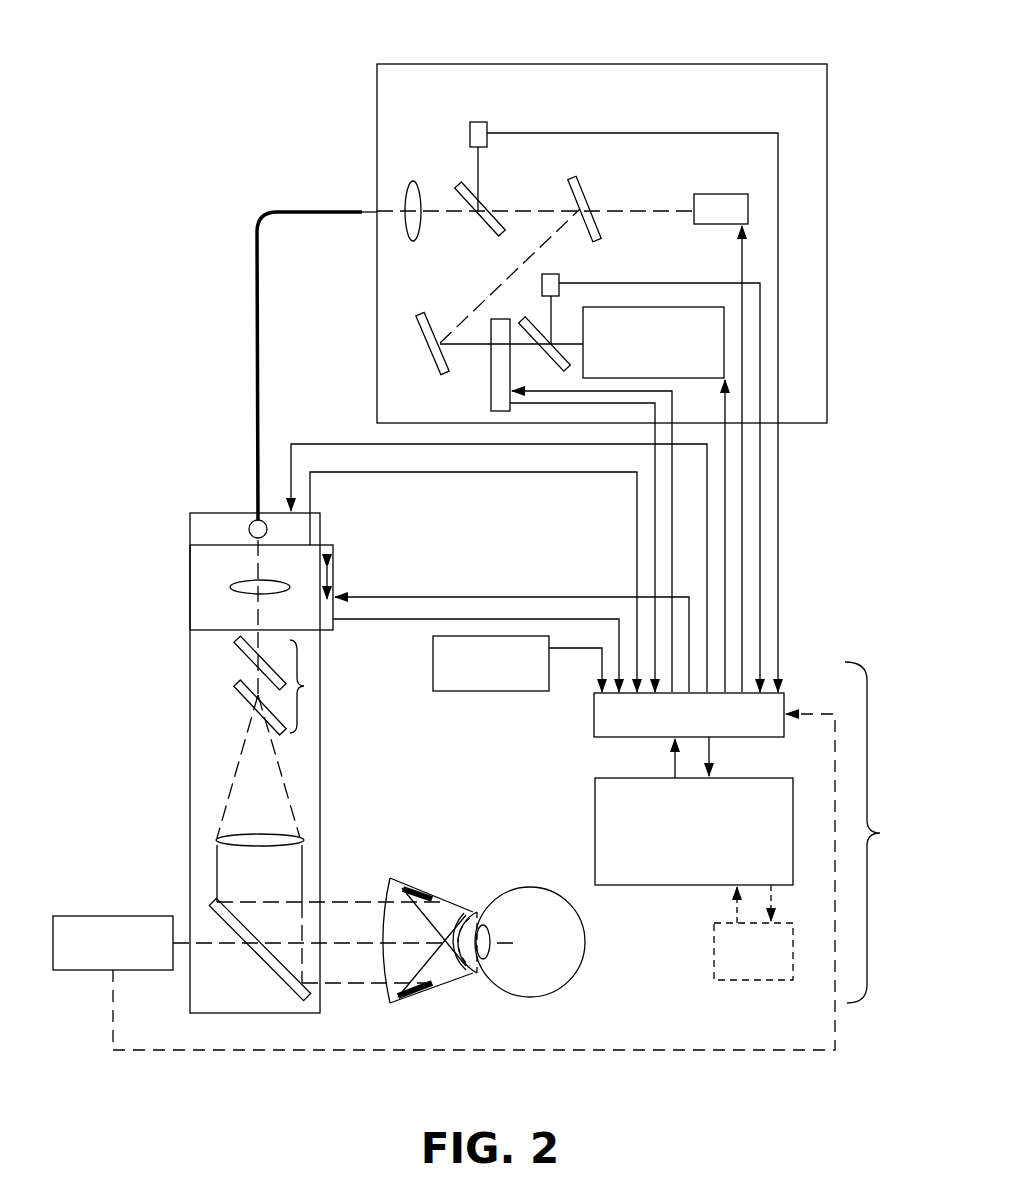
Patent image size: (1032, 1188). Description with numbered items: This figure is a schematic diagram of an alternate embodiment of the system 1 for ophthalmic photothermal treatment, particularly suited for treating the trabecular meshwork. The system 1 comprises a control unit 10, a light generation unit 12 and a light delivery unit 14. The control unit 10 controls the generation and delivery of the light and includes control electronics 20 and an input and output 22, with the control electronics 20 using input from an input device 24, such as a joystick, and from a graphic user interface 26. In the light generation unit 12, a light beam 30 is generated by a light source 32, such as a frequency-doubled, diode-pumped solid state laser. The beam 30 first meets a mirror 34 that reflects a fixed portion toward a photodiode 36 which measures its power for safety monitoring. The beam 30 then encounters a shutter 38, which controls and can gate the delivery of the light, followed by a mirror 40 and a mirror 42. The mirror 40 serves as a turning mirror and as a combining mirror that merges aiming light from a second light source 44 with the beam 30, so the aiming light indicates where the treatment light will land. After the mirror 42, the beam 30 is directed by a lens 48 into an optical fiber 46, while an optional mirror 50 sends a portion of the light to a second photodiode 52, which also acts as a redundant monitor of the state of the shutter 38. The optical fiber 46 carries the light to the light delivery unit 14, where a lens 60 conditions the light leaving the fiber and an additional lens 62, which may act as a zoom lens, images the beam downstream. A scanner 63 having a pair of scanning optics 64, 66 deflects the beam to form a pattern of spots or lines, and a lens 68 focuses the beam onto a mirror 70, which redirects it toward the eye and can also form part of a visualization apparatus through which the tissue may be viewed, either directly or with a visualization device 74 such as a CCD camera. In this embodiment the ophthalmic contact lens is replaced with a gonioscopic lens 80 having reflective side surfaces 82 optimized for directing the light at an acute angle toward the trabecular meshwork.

The system 1 is at (204, 93).
The control unit 10 is at (883, 832).
The light generation unit 12 is at (773, 63).
The light delivery unit 14 is at (189, 795).
The control electronics 20 is at (678, 845).
The input and output 22 is at (673, 728).
The input device 24 is at (475, 675).
The graphic user interface 26 is at (737, 966).
The light beam 30 is at (543, 240).
The light source 32 is at (636, 357).
The mirror 34 is at (565, 364).
The photodiode 36 is at (562, 280).
The shutter 38 is at (490, 398).
The mirror 40 is at (420, 325).
The mirror 42 is at (587, 195).
The second light source 44 is at (721, 194).
The optical fiber 46 is at (275, 210).
The lens 48 is at (411, 183).
The mirror 50 is at (472, 221).
The second photodiode 52 is at (478, 121).
The lens 60 is at (250, 522).
The lens 62 is at (232, 587).
The scanner 63 is at (306, 686).
The scanning optic 64 is at (233, 642).
The scanning optic 66 is at (233, 688).
The lens 68 is at (306, 842).
The mirror 70 is at (275, 975).
The visualization device 74 is at (97, 958).
The gonioscopic lens 80 is at (421, 886).
The reflective side surfaces 82 is at (390, 996).